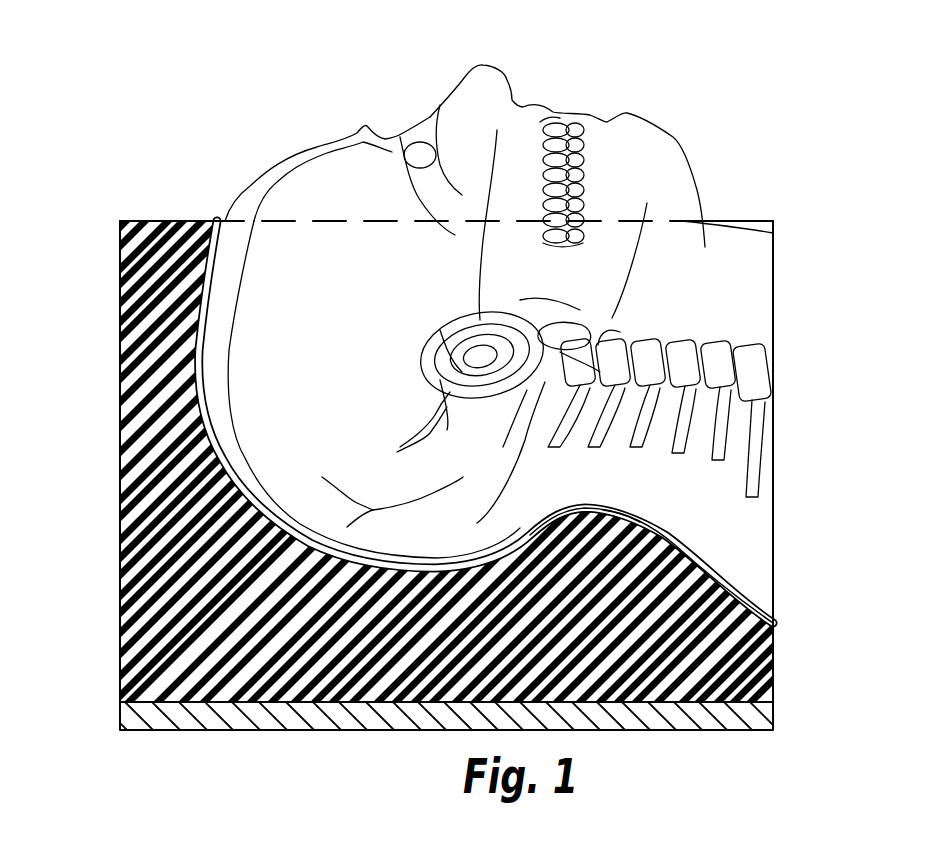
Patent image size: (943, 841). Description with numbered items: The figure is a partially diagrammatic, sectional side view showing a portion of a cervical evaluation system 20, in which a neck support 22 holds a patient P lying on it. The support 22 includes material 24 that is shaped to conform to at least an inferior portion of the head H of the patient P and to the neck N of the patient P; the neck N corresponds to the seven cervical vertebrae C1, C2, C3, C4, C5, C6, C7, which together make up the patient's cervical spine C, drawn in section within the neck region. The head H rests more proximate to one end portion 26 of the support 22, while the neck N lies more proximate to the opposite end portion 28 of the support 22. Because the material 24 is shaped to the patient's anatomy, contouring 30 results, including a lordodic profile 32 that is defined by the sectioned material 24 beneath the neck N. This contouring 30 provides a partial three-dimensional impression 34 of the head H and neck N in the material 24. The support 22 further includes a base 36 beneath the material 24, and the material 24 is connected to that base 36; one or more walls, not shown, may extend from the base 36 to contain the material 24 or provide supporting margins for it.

The cervical evaluation system 20 is at (471, 411).
The neck support 22 is at (110, 217).
The material 24 is at (138, 472).
The end portion 26 is at (120, 632).
The end portion 28 is at (773, 665).
The contouring 30 is at (760, 597).
The lordodic profile 32 is at (667, 528).
The three-dimensional impression 34 is at (471, 465).
The base 36 is at (120, 716).
The patient P is at (533, 281).
The neck N is at (757, 212).
The cervical spine C is at (662, 399).
The head H is at (373, 478).
The first cervical vertebra C1 is at (545, 440).
The second cervical vertebra C2 is at (575, 460).
The third cervical vertebra C3 is at (636, 460).
The fourth cervical vertebra C4 is at (672, 440).
The fifth cervical vertebra C5 is at (693, 462).
The sixth cervical vertebra C6 is at (718, 468).
The seventh cervical vertebra C7 is at (735, 490).